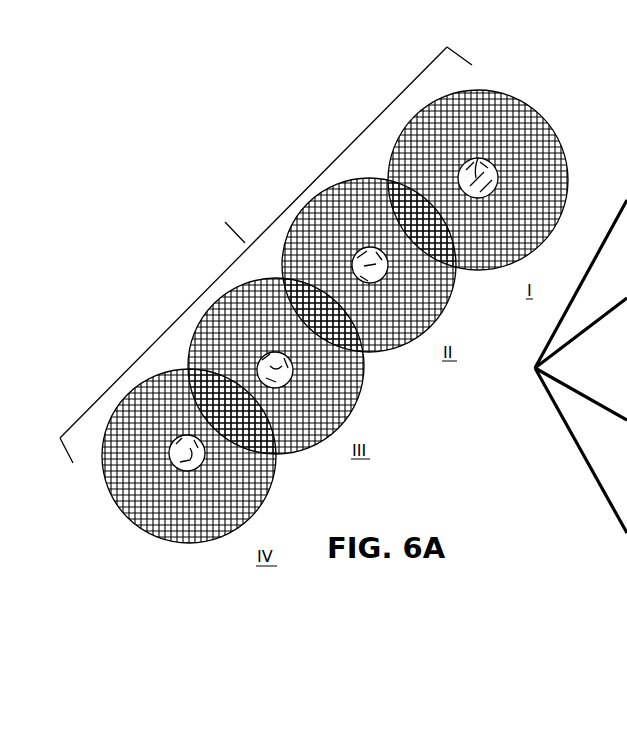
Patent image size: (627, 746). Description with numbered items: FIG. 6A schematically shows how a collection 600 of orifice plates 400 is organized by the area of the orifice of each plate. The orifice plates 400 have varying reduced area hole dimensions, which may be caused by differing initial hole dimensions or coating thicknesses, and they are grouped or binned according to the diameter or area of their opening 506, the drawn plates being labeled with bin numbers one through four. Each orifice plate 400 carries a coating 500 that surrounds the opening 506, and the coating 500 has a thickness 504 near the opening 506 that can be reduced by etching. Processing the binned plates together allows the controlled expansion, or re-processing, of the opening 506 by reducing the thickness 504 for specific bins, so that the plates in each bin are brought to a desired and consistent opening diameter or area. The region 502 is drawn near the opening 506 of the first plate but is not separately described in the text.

The orifice plate 400 is at (358, 322).
The coating 500 is at (506, 180).
The aperture edge 502 is at (495, 188).
The thickness 504 is at (477, 160).
The opening 506 is at (188, 457).
The collection of orifice plates 600 is at (266, 255).